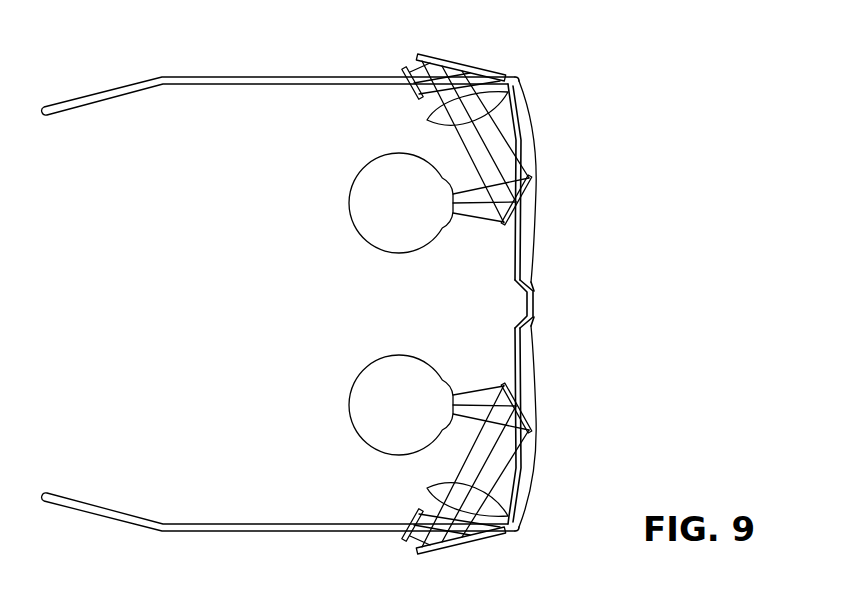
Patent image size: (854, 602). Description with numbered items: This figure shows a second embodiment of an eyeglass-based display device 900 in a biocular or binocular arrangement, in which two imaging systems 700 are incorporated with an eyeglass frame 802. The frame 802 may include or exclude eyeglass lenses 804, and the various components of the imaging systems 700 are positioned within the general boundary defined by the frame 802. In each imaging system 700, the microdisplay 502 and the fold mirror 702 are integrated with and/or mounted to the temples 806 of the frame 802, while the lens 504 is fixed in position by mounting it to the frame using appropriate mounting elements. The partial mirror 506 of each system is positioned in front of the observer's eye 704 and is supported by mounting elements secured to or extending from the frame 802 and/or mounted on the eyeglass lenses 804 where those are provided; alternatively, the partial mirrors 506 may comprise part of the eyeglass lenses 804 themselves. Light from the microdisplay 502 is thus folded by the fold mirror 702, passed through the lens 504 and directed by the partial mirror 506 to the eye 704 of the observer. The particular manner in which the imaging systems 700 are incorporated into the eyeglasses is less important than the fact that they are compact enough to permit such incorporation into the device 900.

The eyeglass-based display device 900 is at (653, 110).
The imaging system 700 is at (546, 96).
The temple 806 is at (318, 79).
The eyeglass lens 804 is at (534, 188).
The eyeglass frame 802 is at (534, 301).
The observer's eye 704 is at (393, 228).
The fold mirror 702 is at (462, 66).
The microdisplay 502 is at (417, 95).
The lens 504 is at (427, 122).
The partial mirror 506 is at (503, 228).